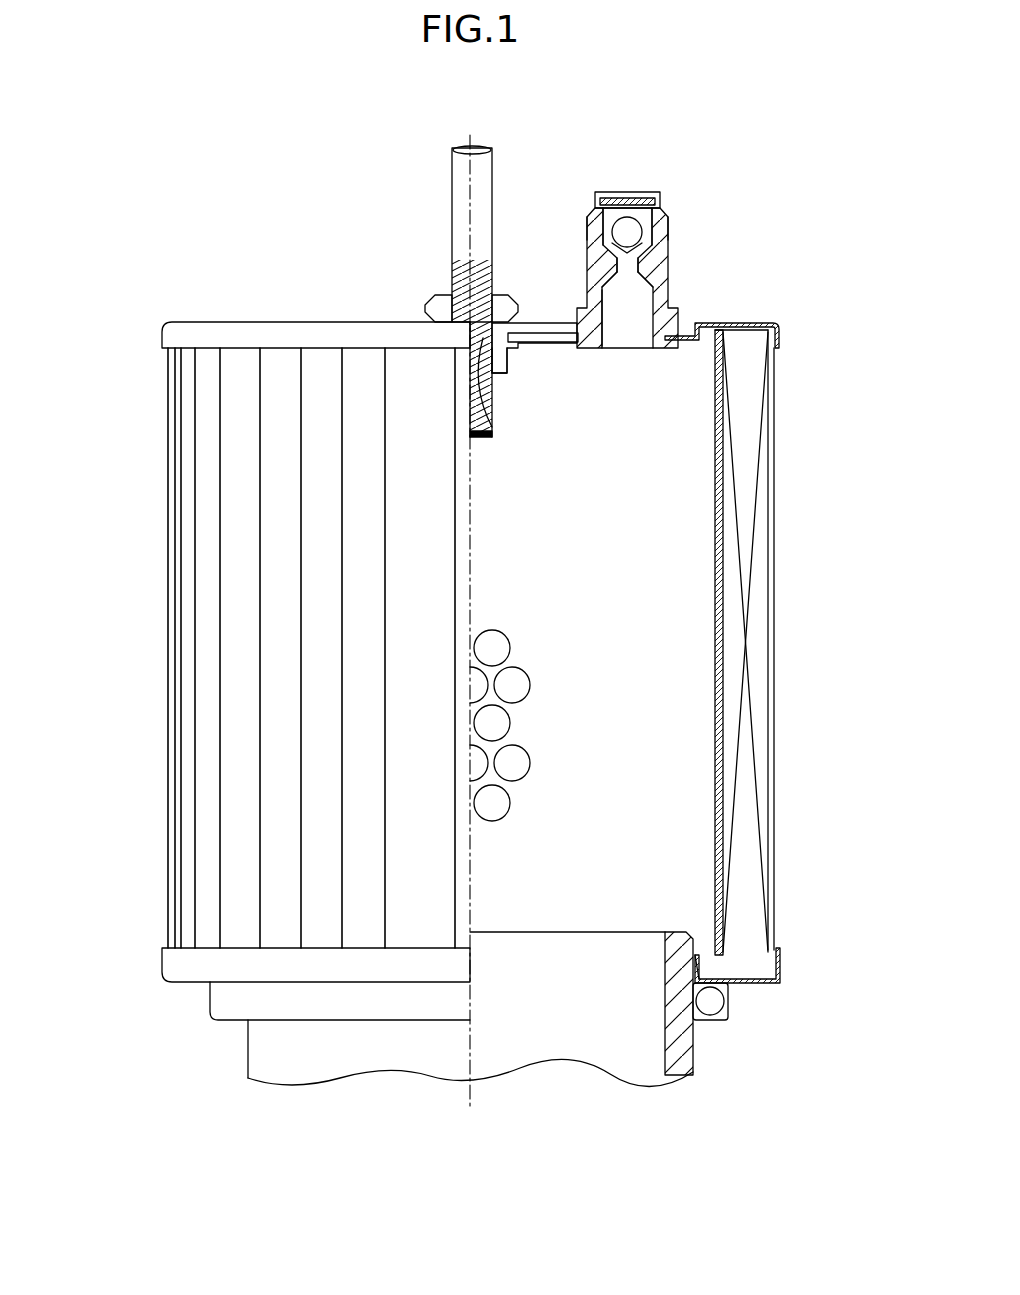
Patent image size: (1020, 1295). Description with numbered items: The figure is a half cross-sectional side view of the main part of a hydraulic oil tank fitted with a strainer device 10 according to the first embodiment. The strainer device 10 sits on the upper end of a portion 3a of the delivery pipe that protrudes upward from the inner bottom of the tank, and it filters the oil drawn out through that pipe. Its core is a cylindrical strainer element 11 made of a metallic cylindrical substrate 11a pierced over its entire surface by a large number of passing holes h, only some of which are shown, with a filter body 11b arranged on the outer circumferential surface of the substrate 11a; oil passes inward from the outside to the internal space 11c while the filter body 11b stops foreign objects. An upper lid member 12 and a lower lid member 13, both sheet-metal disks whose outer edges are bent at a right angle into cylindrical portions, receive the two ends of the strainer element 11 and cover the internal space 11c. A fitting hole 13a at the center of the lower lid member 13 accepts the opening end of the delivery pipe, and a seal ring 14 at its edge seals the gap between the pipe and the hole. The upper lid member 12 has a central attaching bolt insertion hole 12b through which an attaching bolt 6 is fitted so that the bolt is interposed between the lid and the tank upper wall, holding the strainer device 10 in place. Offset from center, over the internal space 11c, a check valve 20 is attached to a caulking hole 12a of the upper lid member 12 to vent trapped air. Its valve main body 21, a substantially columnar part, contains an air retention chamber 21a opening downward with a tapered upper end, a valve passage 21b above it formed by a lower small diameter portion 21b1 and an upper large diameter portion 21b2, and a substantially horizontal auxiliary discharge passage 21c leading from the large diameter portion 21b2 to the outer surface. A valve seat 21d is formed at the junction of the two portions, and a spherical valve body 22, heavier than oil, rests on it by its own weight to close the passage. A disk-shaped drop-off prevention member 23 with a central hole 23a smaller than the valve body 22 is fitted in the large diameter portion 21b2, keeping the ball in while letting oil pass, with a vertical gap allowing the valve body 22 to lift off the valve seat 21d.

The portion of delivery pipe 3a is at (252, 1058).
The attaching bolt 6 is at (460, 190).
The strainer device 10 is at (122, 411).
The strainer element 11 is at (478, 642).
The substrate 11a is at (718, 598).
The filter body 11b is at (742, 650).
The internal space 11c is at (692, 730).
The upper lid member 12 is at (221, 330).
The caulking hole 12a is at (648, 352).
The attaching bolt insertion hole 12b is at (492, 437).
The lower lid member 13 is at (185, 955).
The fitting hole 13a is at (677, 945).
The seal ring 14 is at (710, 1000).
The check valve 20 is at (525, 254).
The valve main body 21 is at (655, 262).
The air retention chamber 21a is at (610, 352).
The valve passage 21b is at (330, 210).
The small diameter portion 21b1 is at (615, 272).
The large diameter portion 21b2 is at (600, 228).
The auxiliary discharge passage 21c is at (590, 222).
The valve seat 21d is at (622, 198).
The valve body 22 is at (658, 228).
The drop-off prevention member 23 is at (605, 198).
The central hole 23a is at (637, 198).
The passing holes h is at (506, 726).